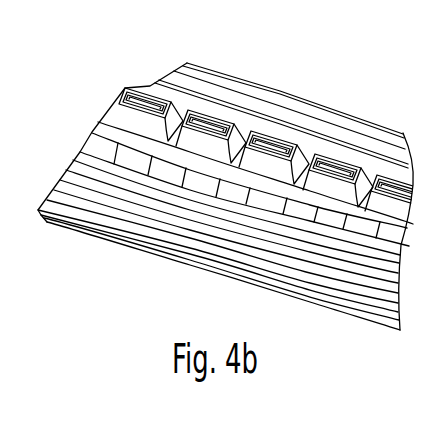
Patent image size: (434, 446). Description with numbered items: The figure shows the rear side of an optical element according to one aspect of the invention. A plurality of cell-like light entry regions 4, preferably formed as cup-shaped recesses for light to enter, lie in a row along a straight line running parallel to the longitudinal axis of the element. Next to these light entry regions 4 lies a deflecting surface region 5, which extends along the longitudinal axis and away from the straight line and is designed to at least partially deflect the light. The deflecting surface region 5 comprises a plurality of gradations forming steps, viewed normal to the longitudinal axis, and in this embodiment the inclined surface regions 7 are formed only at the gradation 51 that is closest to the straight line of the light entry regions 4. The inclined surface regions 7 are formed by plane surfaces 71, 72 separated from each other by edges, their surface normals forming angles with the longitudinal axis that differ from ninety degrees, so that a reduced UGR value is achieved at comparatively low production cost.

The light entry regions 4 is at (124, 91).
The deflecting surface region 5 is at (82, 203).
The inclined surface regions 7 is at (91, 134).
The gradation 51 is at (83, 153).
The plane surface 71 is at (168, 175).
The plane surface 72 is at (200, 185).